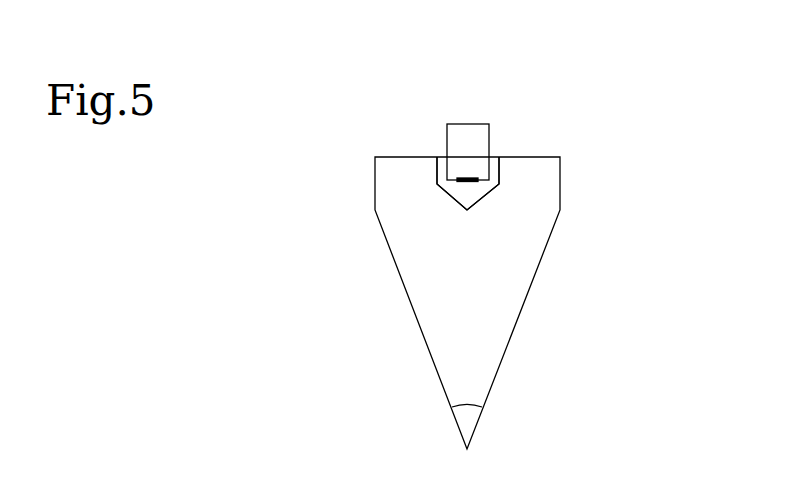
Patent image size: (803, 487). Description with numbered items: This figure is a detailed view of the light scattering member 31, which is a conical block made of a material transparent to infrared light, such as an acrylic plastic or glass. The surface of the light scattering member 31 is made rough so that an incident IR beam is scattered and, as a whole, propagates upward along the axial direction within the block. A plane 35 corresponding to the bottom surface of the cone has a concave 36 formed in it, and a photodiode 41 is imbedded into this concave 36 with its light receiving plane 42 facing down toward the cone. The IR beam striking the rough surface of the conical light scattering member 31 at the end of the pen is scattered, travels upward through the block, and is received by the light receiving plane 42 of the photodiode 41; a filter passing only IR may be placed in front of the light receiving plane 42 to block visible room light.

The light scattering member 31 is at (532, 251).
The plane 35 is at (412, 157).
The concave 36 is at (492, 193).
The photodiode 41 is at (492, 135).
The light receiving plane 42 is at (467, 182).